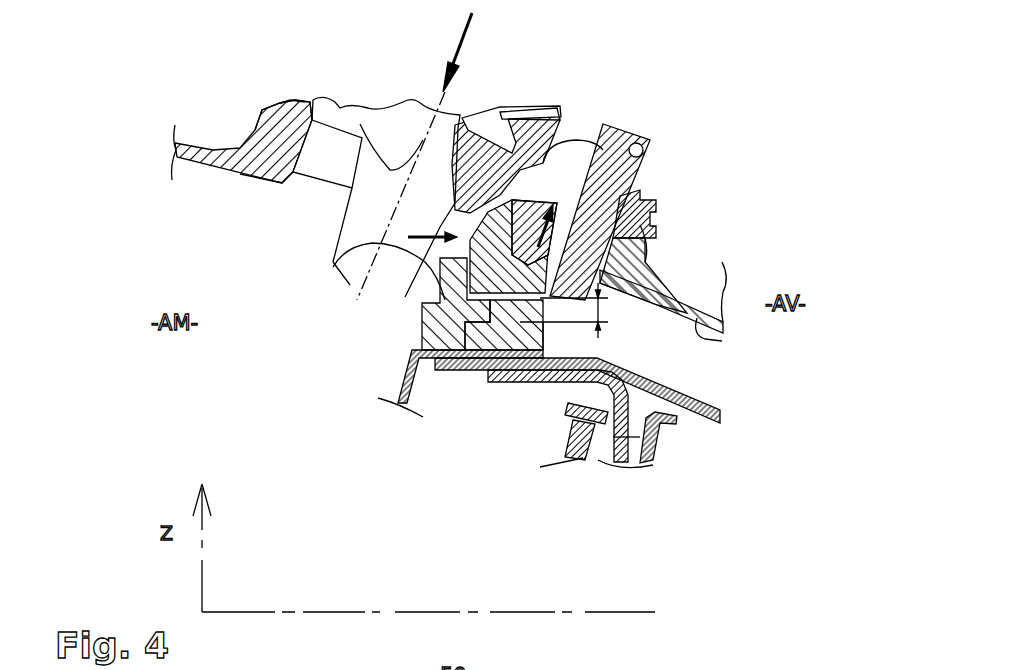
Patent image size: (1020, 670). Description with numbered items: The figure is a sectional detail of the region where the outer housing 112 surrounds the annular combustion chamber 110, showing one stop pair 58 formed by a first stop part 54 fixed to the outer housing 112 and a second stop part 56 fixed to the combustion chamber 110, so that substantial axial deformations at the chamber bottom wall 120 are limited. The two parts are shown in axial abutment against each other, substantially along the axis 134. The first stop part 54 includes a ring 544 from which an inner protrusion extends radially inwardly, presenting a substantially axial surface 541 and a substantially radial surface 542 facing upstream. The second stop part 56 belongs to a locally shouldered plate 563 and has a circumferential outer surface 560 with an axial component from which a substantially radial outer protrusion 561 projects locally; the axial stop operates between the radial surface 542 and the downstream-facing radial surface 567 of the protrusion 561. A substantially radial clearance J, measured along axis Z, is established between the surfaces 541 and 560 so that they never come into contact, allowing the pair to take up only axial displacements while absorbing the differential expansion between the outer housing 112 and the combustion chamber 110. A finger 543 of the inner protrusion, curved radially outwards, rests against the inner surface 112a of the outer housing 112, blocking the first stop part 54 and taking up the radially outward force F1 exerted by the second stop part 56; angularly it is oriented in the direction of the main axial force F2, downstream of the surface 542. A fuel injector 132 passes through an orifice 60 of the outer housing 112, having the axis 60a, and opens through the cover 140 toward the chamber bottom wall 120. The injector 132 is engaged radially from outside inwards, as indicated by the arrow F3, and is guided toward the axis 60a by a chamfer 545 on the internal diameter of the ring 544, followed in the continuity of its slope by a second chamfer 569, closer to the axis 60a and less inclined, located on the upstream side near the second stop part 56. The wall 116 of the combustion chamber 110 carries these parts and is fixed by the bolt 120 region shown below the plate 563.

The outer housing 112 is at (201, 141).
The inner surface of the outer housing 112a is at (713, 338).
The casing wall 116 is at (650, 378).
The chamber bottom wall 120 is at (640, 438).
The fuel injector 132 is at (356, 284).
The axis 134 is at (317, 612).
The cover 140 is at (442, 370).
The annular combustion chamber 110 is at (506, 393).
The first stop part 54 is at (588, 165).
The substantially axial surface 541 is at (490, 320).
The substantially radial surface 542 is at (653, 208).
The finger 543 is at (540, 277).
The ring 544 is at (303, 143).
The chamfer 545 is at (527, 118).
The second stop part 56 is at (437, 330).
The circumferential outer surface 560 is at (533, 320).
The substantially radial outer protrusion 561 is at (517, 196).
The locally shouldered plate 563 is at (520, 322).
The radial surface of the protrusion 567 is at (440, 290).
The second chamfer 569 is at (333, 267).
The pair of stops 58 is at (483, 188).
The orifice 60 is at (310, 190).
The axis of the orifice 60a is at (373, 110).
The radial clearance J is at (569, 310).
The force F1 is at (556, 208).
The force F2 is at (418, 235).
The arrow F3 is at (457, 30).